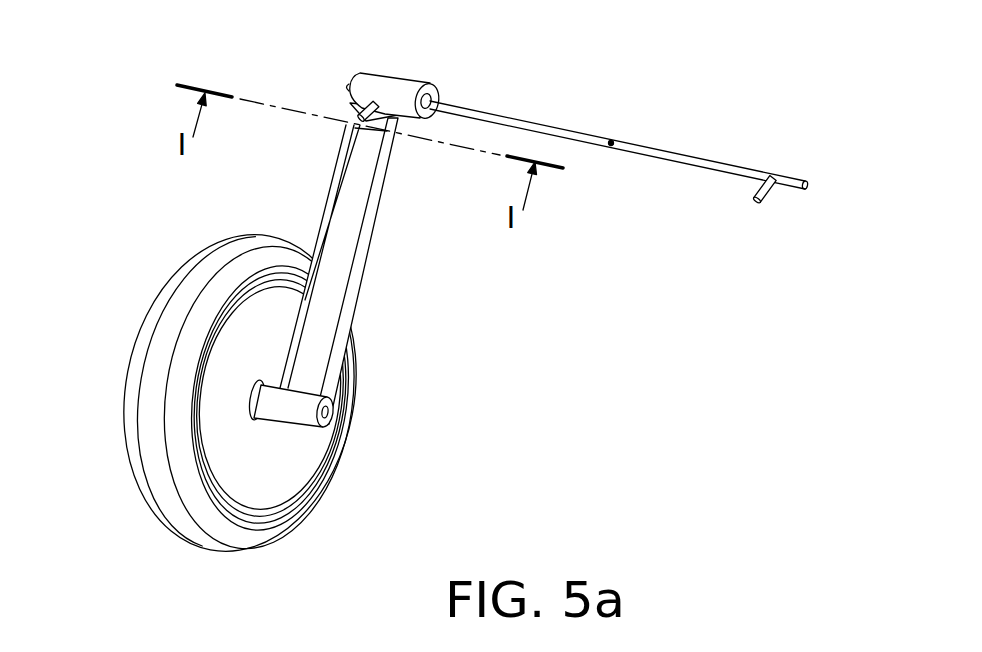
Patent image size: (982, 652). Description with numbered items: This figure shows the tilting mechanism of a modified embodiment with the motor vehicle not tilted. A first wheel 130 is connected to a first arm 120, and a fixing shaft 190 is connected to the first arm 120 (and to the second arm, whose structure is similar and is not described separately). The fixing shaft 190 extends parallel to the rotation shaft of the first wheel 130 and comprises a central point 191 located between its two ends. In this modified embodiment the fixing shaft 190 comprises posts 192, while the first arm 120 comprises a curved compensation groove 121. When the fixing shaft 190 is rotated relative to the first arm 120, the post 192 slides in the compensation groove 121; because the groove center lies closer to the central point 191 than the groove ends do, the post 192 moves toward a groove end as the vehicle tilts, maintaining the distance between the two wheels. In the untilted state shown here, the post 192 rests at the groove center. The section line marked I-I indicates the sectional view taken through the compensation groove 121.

The first arm 120 is at (367, 79).
The compensation groove 121 is at (398, 100).
The first wheel 130 is at (164, 348).
The fixing shaft 190 is at (512, 118).
The central point 191 is at (611, 143).
The post 192 is at (346, 111).